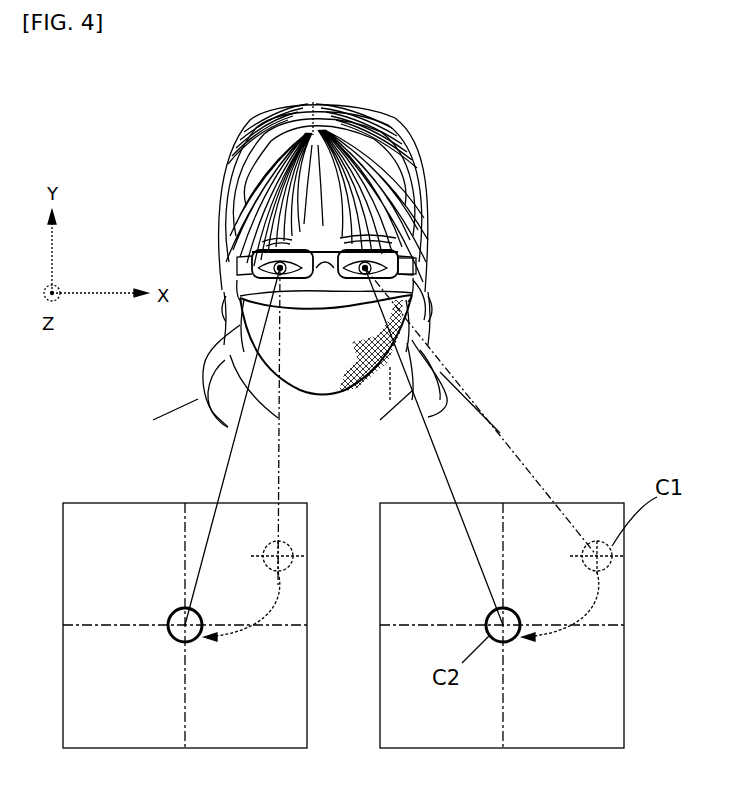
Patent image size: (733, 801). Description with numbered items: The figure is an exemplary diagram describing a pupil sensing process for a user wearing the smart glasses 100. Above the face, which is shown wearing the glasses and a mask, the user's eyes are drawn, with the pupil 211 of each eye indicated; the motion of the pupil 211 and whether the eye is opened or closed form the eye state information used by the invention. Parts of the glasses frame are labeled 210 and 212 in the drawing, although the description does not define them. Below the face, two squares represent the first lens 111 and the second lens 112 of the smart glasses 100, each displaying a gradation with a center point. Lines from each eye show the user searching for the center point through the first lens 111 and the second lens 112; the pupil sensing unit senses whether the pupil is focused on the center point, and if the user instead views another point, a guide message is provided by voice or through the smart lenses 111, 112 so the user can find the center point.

The smart glasses 100 is at (343, 267).
The glasses frame 210 is at (403, 258).
The pupil 211 is at (455, 318).
The glasses temple 212 is at (418, 282).
The first lens 111 is at (100, 503).
The second lens 112 is at (585, 503).